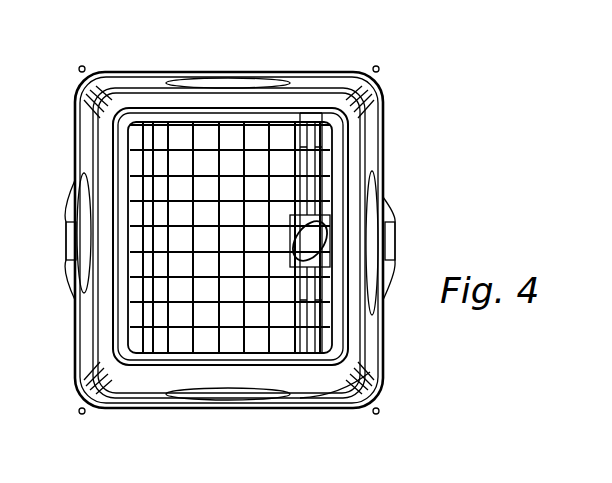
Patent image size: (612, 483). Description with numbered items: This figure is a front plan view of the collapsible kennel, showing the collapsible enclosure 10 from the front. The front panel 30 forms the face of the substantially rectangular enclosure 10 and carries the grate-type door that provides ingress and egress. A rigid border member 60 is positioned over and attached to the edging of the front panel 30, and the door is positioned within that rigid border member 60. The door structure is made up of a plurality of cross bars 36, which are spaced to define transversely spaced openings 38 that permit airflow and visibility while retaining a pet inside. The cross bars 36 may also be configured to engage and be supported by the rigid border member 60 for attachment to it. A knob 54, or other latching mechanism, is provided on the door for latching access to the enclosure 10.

The collapsible enclosure 10 is at (413, 70).
The front panel 30 is at (165, 289).
The cross bars 36 is at (170, 138).
The transversely spaced openings 38 is at (285, 337).
The knob 54 is at (315, 234).
The rigid border member 60 is at (352, 350).